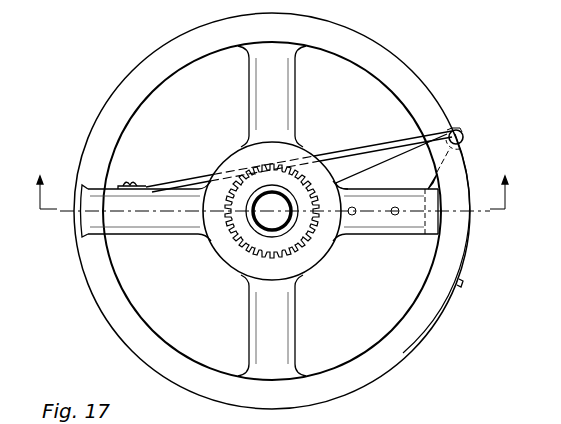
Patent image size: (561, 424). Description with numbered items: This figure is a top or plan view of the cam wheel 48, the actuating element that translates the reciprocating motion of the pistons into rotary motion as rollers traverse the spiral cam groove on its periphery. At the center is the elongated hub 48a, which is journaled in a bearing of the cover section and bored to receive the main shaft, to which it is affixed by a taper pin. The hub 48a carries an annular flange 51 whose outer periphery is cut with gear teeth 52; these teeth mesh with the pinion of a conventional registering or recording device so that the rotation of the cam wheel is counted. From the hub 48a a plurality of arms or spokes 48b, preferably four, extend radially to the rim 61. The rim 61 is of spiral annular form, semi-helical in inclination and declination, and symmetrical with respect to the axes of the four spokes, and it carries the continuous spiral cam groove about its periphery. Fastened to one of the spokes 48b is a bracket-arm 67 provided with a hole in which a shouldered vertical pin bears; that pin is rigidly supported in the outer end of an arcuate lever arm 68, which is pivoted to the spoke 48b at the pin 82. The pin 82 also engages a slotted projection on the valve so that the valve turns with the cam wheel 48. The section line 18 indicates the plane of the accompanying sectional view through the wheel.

The cam wheel 48 is at (407, 82).
The elongated hub 48a is at (258, 232).
The arms or spokes 48b is at (268, 93).
The annular flange 51 is at (312, 257).
The gear teeth 52 is at (230, 241).
The rim 61 is at (97, 293).
The bracket-arm 67 is at (392, 167).
The arcuate lever arm 68 is at (200, 177).
The pin 82 is at (124, 178).
The section line 18- 18 is at (268, 210).